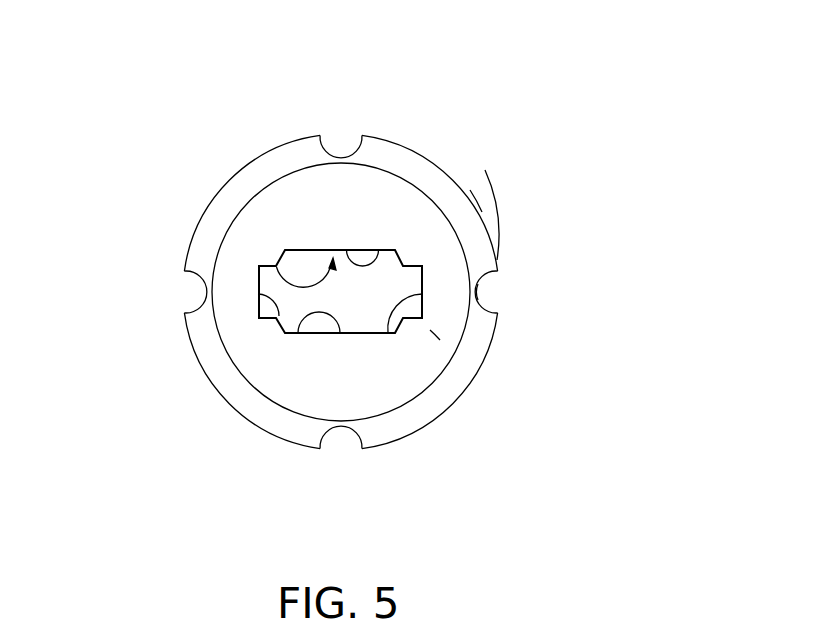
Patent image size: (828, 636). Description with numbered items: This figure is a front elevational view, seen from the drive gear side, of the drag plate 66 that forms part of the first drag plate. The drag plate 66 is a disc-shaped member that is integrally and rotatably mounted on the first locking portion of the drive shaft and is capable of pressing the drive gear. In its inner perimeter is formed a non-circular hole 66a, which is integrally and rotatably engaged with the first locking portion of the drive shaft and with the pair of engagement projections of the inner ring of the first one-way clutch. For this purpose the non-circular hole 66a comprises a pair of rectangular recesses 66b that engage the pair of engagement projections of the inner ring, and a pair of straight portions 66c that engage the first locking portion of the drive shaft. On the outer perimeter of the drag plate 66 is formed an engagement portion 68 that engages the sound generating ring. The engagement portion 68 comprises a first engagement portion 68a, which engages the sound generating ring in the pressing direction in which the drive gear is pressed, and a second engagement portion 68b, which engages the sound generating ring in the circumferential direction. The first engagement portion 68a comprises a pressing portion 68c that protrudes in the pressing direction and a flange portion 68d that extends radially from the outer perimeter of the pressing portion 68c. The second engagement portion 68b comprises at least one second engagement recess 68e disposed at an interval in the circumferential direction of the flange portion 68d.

The drag plate 66 is at (467, 155).
The non-circular hole 66a is at (277, 265).
The rectangular recesses 66b is at (277, 318).
The straight portions 66c is at (378, 250).
The engagement portion 68 is at (647, 230).
The first engagement portion 68a is at (497, 235).
The second engagement portion 68b is at (494, 284).
The pressing portion 68c is at (443, 328).
The flange portion 68d is at (477, 205).
The second engagement recess 68e is at (334, 150).